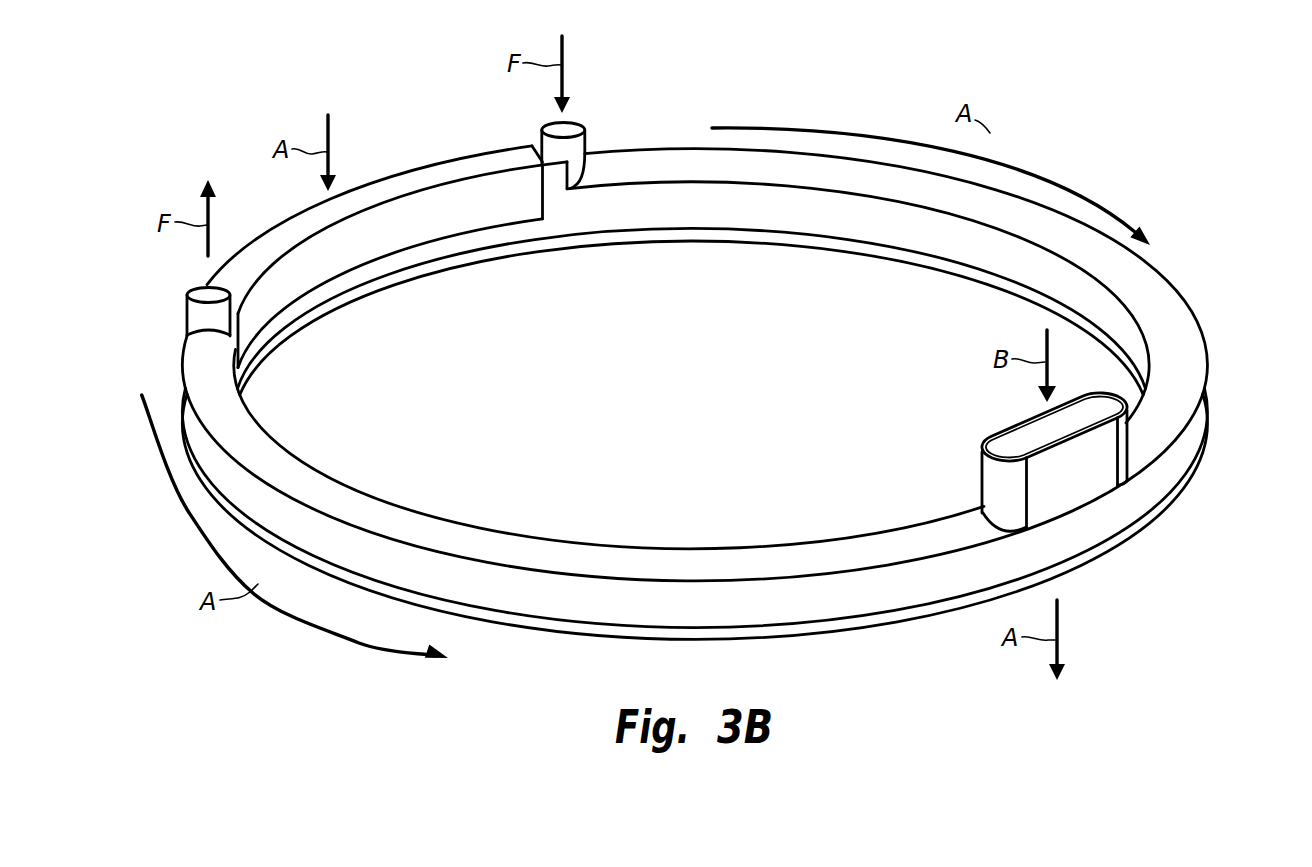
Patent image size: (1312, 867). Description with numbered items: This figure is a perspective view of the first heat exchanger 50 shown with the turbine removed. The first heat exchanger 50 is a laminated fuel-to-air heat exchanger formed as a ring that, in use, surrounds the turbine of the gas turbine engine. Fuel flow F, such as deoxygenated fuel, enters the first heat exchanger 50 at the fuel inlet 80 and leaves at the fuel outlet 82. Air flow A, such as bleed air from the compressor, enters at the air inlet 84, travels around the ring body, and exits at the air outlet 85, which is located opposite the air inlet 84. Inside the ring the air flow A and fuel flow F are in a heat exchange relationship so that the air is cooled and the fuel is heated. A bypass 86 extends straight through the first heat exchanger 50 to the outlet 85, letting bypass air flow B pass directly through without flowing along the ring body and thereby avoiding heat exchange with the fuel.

The first heat exchanger 50 is at (1230, 240).
The fuel inlet 80 is at (578, 146).
The fuel outlet 82 is at (192, 316).
The air inlet 84 is at (420, 175).
The air outlet 85 is at (1102, 553).
The bypass 86 is at (998, 491).